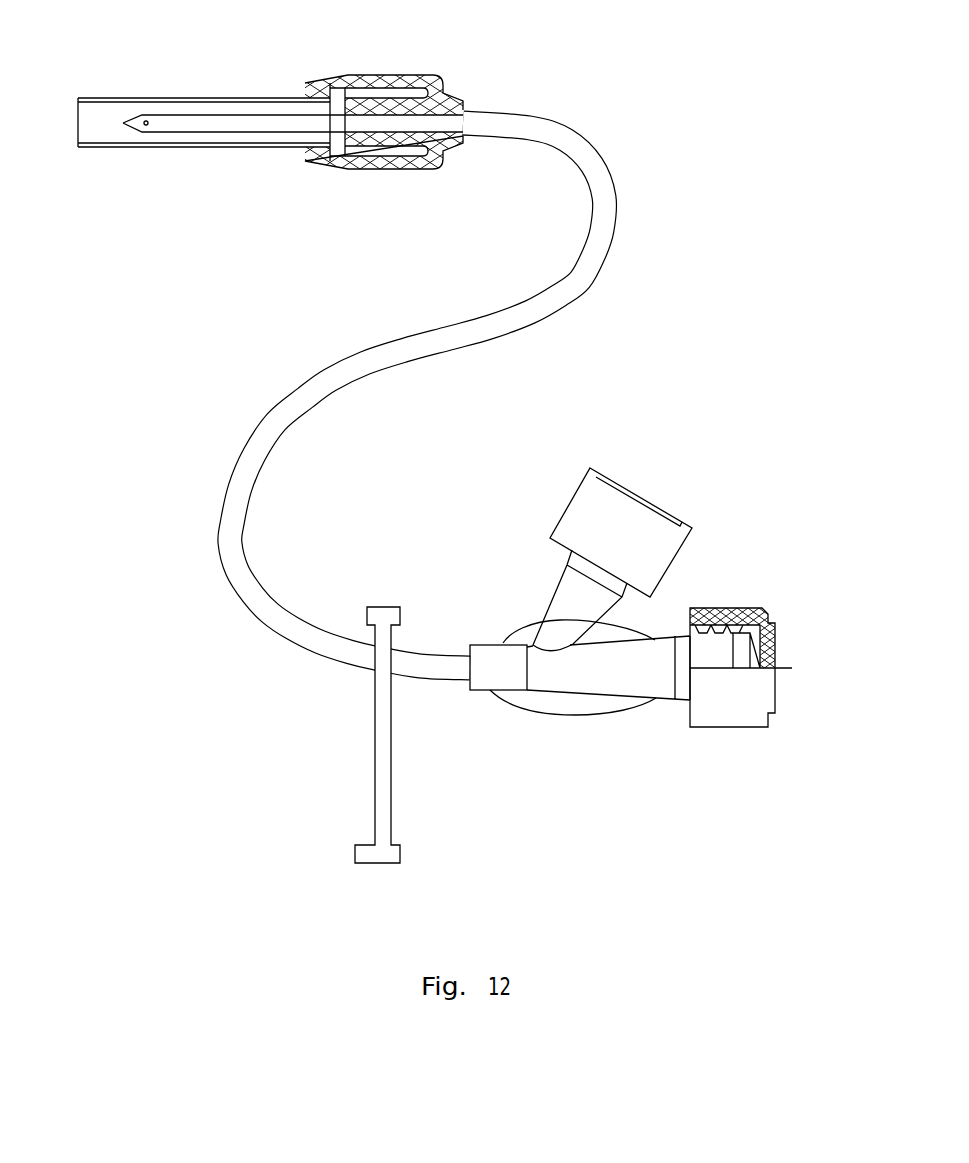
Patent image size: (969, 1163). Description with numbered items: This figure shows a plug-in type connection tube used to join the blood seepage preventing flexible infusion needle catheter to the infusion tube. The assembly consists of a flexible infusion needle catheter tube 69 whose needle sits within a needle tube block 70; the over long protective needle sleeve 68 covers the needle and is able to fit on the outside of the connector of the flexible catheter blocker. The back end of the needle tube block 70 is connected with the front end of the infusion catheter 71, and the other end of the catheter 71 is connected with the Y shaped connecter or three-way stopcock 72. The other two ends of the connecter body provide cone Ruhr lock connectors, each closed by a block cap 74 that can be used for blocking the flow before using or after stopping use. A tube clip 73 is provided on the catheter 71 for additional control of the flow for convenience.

The needle sheath 68 is at (110, 98).
The flexible infusion needle catheter tube 69 is at (233, 120).
The needle tube block 70 is at (398, 84).
The catheter 71 is at (595, 158).
The Y shaped connecter or 3-way stopcock 72 is at (514, 657).
The tube clip 73 is at (383, 812).
The block cap 74 is at (608, 483).